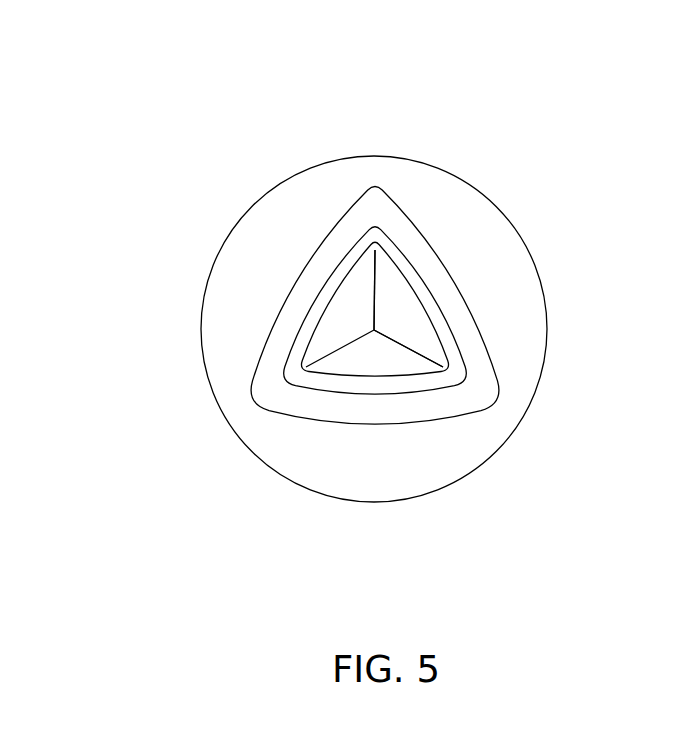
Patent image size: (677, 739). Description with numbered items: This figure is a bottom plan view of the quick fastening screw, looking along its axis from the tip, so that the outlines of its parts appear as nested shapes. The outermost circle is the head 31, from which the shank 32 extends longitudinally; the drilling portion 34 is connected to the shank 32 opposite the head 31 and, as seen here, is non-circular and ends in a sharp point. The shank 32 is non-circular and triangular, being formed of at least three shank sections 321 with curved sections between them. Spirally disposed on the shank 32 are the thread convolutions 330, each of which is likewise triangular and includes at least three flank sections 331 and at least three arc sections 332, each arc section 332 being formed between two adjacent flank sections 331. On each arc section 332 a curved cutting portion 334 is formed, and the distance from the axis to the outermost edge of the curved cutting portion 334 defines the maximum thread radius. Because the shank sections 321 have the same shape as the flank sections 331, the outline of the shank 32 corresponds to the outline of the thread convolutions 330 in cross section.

The head 31 is at (455, 173).
The shank 32 is at (425, 316).
The shank section 321 is at (428, 334).
The thread convolution 330 is at (283, 297).
The flank section 331 is at (305, 268).
The arc section 332 is at (358, 184).
The curved cutting portion 334 is at (374, 188).
The drilling portion 34 is at (360, 358).